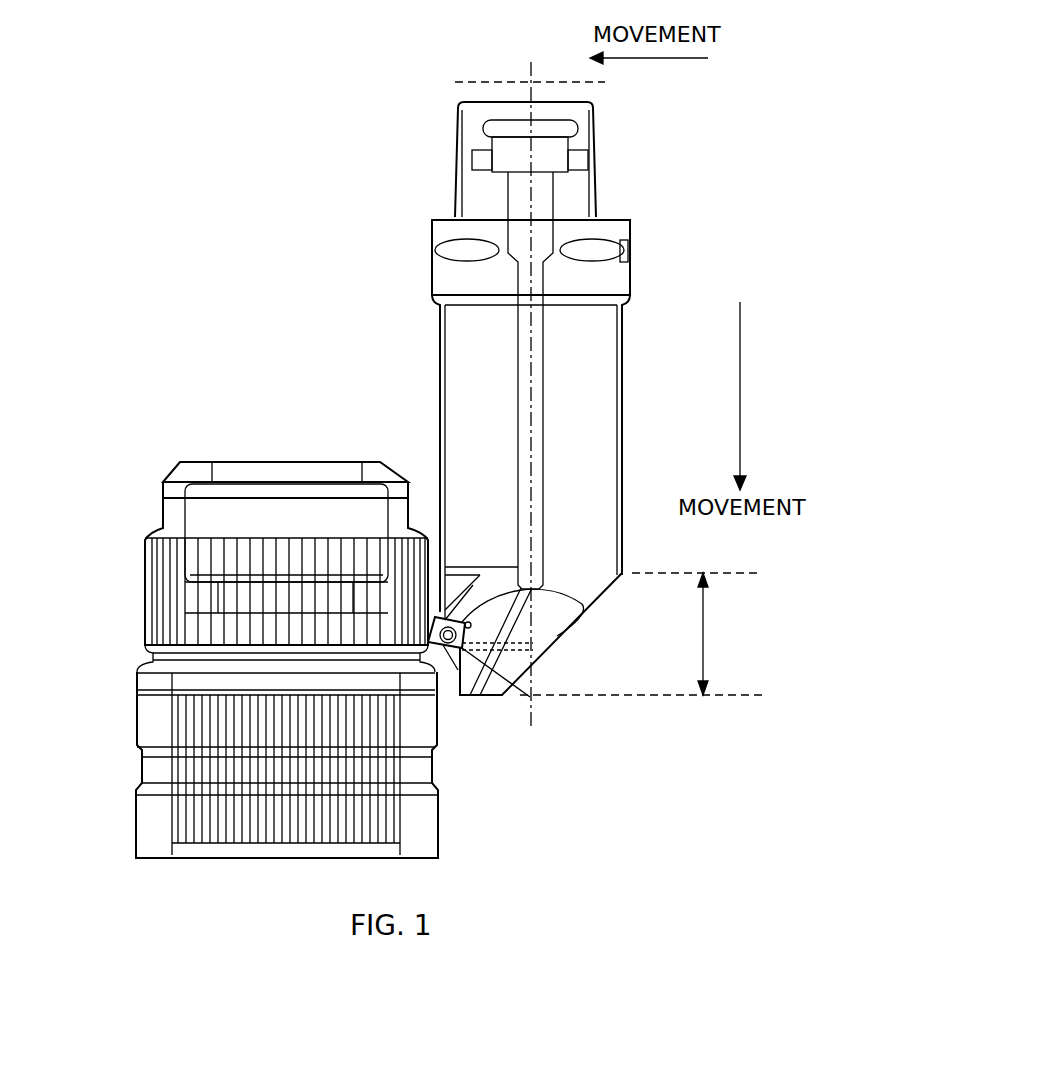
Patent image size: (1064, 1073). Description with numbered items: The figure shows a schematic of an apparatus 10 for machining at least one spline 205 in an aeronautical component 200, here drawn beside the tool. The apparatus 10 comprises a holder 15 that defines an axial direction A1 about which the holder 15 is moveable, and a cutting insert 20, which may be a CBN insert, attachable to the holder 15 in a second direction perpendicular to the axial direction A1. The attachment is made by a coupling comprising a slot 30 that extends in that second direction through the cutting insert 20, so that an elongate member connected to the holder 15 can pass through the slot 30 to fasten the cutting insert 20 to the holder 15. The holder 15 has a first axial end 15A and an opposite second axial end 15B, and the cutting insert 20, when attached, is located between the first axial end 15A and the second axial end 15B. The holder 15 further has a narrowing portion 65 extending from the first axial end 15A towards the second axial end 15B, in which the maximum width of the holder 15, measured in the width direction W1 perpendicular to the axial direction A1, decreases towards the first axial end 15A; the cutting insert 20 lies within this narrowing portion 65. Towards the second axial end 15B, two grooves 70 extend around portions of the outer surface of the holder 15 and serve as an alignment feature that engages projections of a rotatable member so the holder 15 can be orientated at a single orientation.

The apparatus 10 is at (650, 175).
The holder 15 is at (624, 420).
The first axial end 15A is at (473, 697).
The second axial end 15B is at (456, 108).
The cutting insert 20 is at (530, 697).
The slot 30 is at (445, 652).
The narrowing portion 65 is at (642, 634).
The grooves 70 is at (632, 250).
The aeronautical component 200 is at (158, 487).
The spline 205 is at (152, 555).
The axial direction A1 is at (531, 383).
The width direction W1 is at (551, 82).